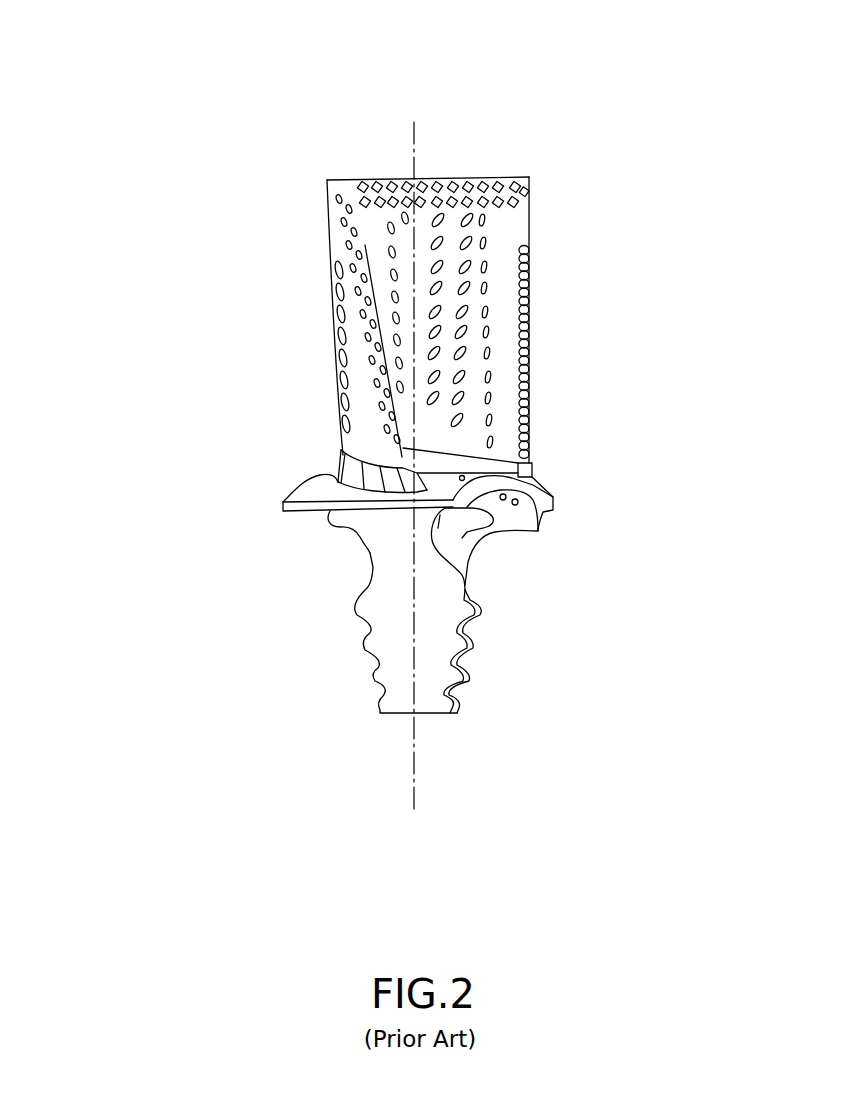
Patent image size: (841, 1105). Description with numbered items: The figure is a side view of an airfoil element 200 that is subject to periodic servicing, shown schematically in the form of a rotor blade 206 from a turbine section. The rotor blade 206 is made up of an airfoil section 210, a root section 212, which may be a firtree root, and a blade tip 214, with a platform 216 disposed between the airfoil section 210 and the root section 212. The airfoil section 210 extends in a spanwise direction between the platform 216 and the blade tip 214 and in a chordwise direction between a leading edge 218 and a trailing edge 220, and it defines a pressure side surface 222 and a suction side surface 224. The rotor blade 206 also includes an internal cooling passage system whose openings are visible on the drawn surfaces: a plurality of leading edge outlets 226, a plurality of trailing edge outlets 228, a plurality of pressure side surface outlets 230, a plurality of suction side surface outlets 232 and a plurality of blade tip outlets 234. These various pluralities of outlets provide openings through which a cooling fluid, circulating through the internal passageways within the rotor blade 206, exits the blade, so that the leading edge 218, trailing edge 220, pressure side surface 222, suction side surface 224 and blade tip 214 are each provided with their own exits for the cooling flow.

The airfoil element 200 is at (166, 80).
The rotor blade 206 is at (186, 189).
The airfoil section 210 is at (248, 333).
The root section 212 is at (280, 583).
The blade tip 214 is at (568, 176).
The platform 216 is at (313, 494).
The leading edge 218 is at (346, 368).
The trailing edge 220 is at (532, 332).
The pressure side surface 222 is at (500, 253).
The suction side surface 224 is at (342, 256).
The leading edge outlets 226 is at (389, 417).
The trailing edge outlets 228 is at (534, 396).
The pressure side surface outlets 230 is at (455, 313).
The suction side surface outlets 232 is at (342, 310).
The blade tip outlets 234 is at (437, 190).